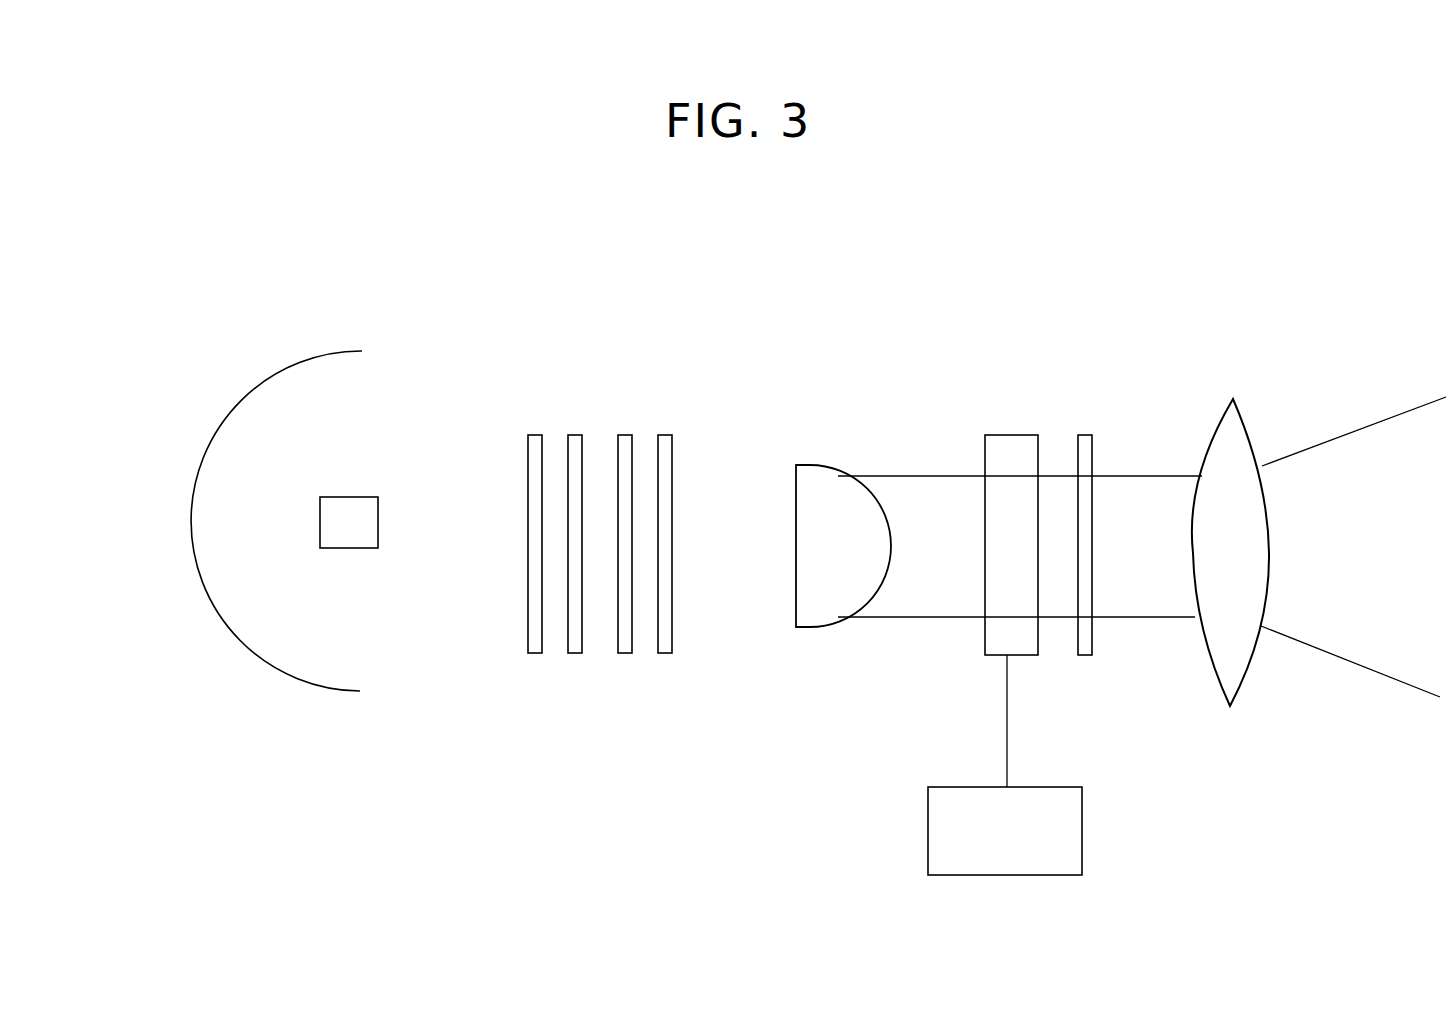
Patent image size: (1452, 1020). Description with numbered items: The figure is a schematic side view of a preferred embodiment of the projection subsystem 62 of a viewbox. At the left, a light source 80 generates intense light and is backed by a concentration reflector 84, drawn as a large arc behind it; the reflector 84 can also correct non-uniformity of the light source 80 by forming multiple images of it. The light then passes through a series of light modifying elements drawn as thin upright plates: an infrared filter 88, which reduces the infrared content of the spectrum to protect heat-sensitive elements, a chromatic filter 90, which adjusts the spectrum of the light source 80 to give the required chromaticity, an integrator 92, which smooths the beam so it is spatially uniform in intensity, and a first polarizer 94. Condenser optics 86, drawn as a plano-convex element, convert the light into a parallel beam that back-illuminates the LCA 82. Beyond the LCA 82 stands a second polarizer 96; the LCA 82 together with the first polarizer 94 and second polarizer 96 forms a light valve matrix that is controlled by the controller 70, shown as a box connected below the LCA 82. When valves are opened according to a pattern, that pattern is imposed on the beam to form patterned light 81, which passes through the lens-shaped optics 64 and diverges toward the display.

The projection subsystem 62 is at (920, 257).
The optics 64 is at (1270, 525).
The controller 70 is at (1082, 840).
The light source 80 is at (360, 497).
The patterned light 81 is at (1137, 476).
The LCA 82 is at (993, 435).
The concentration reflector 84 is at (198, 475).
The condenser optics 86 is at (806, 465).
The infrared filter 88 is at (530, 653).
The chromatic filter 90 is at (578, 435).
The integrator 92 is at (625, 653).
The first polarizer 94 is at (668, 435).
The second polarizer 96 is at (1083, 435).